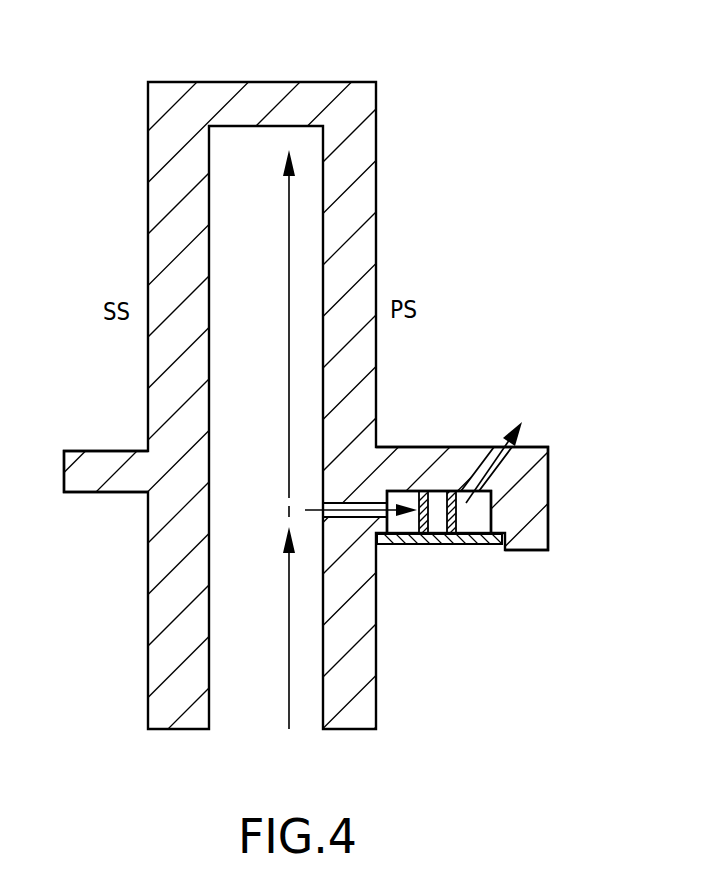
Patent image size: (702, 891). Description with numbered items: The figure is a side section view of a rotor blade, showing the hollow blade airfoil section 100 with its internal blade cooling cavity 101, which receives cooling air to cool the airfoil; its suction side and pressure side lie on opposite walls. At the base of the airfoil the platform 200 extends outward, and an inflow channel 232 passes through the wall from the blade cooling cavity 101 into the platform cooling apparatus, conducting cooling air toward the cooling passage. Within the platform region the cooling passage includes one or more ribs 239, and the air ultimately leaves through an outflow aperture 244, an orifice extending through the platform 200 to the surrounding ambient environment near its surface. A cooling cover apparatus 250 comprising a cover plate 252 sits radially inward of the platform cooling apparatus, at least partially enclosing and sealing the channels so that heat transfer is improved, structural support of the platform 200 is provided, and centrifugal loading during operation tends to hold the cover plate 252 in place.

The blade airfoil section 100 is at (303, 93).
The blade cooling cavity 101 is at (305, 141).
The platform 200 is at (126, 462).
The inflow channel 232 is at (346, 504).
The outflow aperture 244 is at (497, 455).
The rib 239 is at (422, 532).
The cooling cover apparatus 250 is at (440, 545).
The cover plate 252 is at (485, 542).